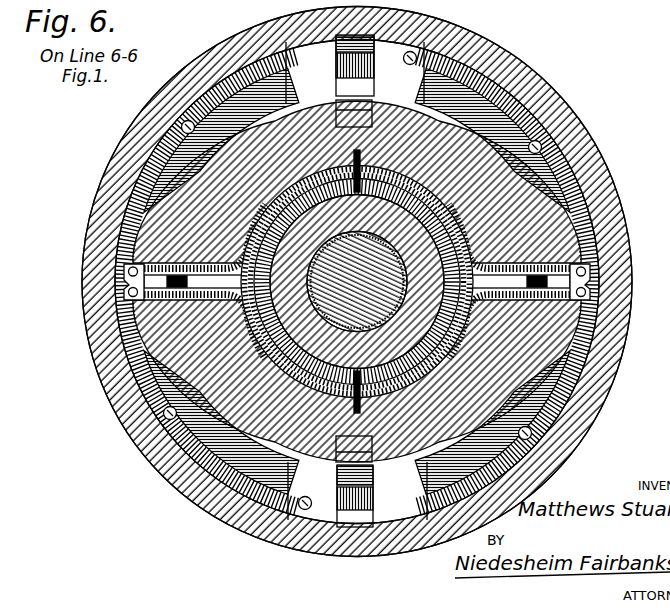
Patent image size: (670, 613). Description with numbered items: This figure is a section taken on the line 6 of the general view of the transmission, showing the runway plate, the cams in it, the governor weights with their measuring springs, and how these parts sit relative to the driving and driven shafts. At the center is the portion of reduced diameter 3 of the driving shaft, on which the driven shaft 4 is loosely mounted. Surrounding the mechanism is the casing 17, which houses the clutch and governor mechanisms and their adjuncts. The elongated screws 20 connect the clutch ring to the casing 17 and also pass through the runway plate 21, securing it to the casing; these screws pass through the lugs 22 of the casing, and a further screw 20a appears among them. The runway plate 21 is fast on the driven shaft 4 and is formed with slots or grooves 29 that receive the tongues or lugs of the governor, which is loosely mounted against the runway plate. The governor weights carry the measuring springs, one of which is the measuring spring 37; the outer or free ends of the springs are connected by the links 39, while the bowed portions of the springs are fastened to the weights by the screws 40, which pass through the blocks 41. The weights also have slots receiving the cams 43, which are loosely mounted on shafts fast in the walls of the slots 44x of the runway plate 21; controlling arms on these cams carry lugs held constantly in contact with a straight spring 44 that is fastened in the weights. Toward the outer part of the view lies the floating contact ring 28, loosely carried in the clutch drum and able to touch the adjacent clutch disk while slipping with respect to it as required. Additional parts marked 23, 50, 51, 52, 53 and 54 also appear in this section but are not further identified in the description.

The portion of reduced diameter 3 is at (357, 282).
The driven shaft 4 is at (345, 245).
The section line 6 is at (452, 232).
The casing 17 is at (138, 126).
The elongated screws 20 is at (263, 47).
The screw 20a is at (408, 88).
The runway plate 21 is at (443, 26).
The lugs 22 is at (585, 133).
The casing rim 23 is at (184, 497).
The floating contact ring 28 is at (164, 467).
The slots or grooves 29 is at (432, 484).
The measuring spring 37 is at (262, 232).
The links 39 is at (122, 282).
The screws 40 is at (363, 163).
The blocks 41 is at (420, 183).
The cams 43 is at (352, 83).
The straight spring 44 is at (523, 60).
The slots 44x is at (347, 557).
The rotor part 50 is at (388, 412).
The rotor part 51 is at (498, 340).
The rotor upper half 52 is at (357, 182).
The rotor lower half 53 is at (258, 336).
The rotor part 54 is at (427, 390).